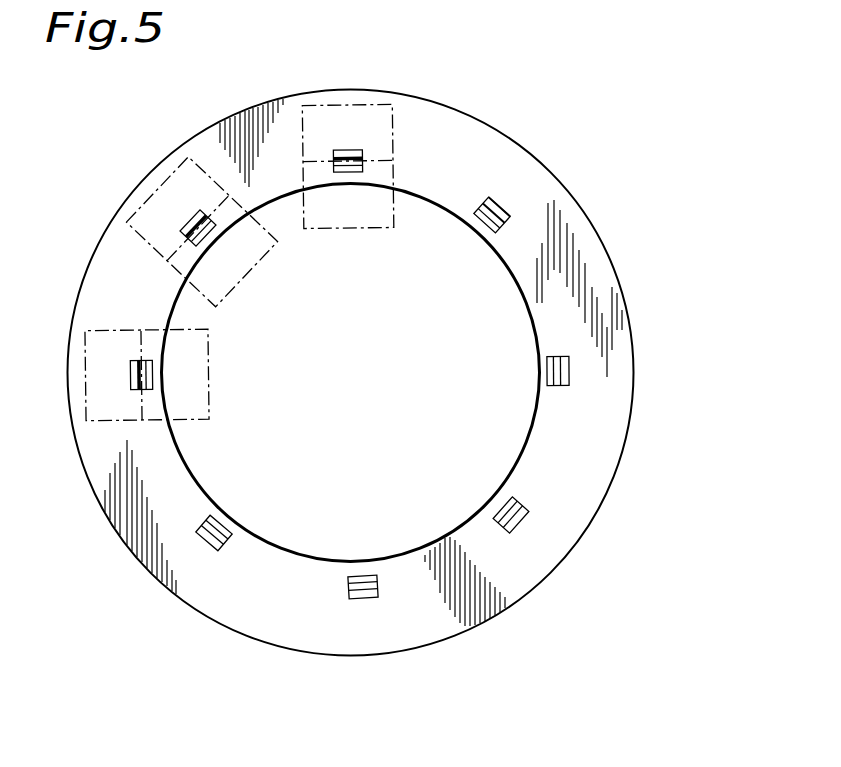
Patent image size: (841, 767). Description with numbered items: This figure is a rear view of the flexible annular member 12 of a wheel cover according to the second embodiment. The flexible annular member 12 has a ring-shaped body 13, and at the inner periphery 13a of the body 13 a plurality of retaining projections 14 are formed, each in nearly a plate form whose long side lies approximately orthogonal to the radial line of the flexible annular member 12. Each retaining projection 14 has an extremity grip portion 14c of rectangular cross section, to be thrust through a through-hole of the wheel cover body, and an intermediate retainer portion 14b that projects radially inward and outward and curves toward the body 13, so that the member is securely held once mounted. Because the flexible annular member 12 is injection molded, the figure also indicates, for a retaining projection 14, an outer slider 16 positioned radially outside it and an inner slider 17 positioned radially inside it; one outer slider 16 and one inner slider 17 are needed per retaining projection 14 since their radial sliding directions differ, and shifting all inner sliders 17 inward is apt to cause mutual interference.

The flexible annular member 12 is at (628, 318).
The body 13 is at (580, 468).
The inner periphery 13a is at (532, 265).
The retaining projection 14 is at (353, 150).
The intermediate retainer portion 14b is at (492, 231).
The extremity grip portion 14c is at (490, 200).
The outer slider 16 is at (132, 232).
The inner slider 17 is at (218, 302).